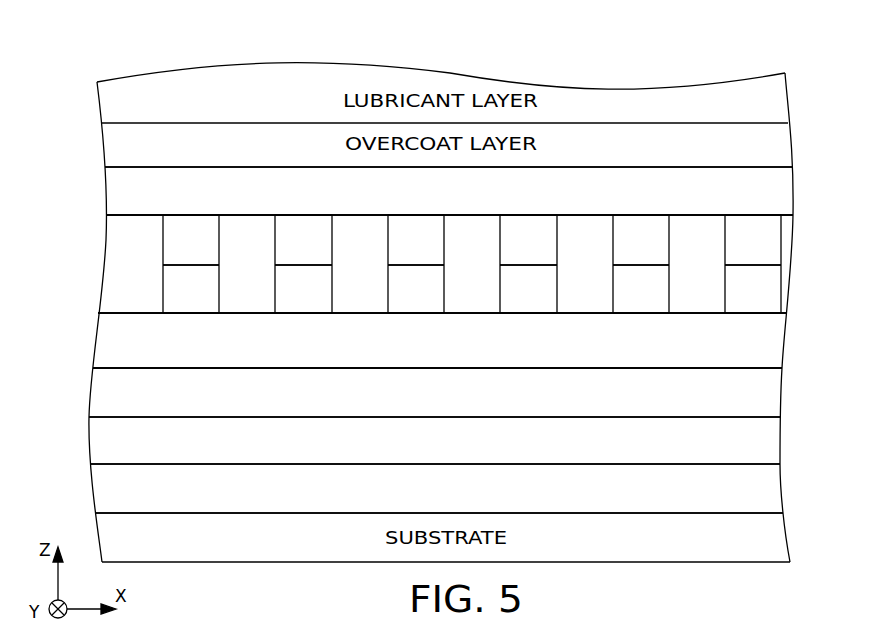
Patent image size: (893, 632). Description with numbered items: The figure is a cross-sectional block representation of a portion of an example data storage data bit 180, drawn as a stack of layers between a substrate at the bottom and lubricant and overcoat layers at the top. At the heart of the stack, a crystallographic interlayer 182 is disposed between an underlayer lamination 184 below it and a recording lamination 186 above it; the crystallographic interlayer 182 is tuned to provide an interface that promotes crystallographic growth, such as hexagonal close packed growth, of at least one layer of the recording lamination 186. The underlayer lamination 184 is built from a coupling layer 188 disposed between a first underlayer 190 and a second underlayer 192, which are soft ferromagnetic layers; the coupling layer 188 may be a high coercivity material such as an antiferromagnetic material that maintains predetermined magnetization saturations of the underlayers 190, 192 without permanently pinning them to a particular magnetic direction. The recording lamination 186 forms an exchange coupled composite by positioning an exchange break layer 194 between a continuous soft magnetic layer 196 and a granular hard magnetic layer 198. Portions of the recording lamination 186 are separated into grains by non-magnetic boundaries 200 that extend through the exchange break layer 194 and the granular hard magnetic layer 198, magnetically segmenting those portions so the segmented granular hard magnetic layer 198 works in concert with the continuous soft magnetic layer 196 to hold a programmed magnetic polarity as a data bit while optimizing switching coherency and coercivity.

The data bit 180 is at (130, 42).
The crystallographic interlayer 182 is at (771, 351).
The underlayer lamination 184 is at (797, 368).
The recording lamination 186 is at (797, 167).
The coupling layer 188 is at (771, 451).
The first underlayer 190 is at (771, 501).
The second underlayer 192 is at (771, 402).
The exchange break layer 194 is at (173, 251).
The continuous soft magnetic layer 196 is at (771, 202).
The granular hard magnetic layer 198 is at (173, 301).
The non-magnetic boundaries 200 is at (117, 276).